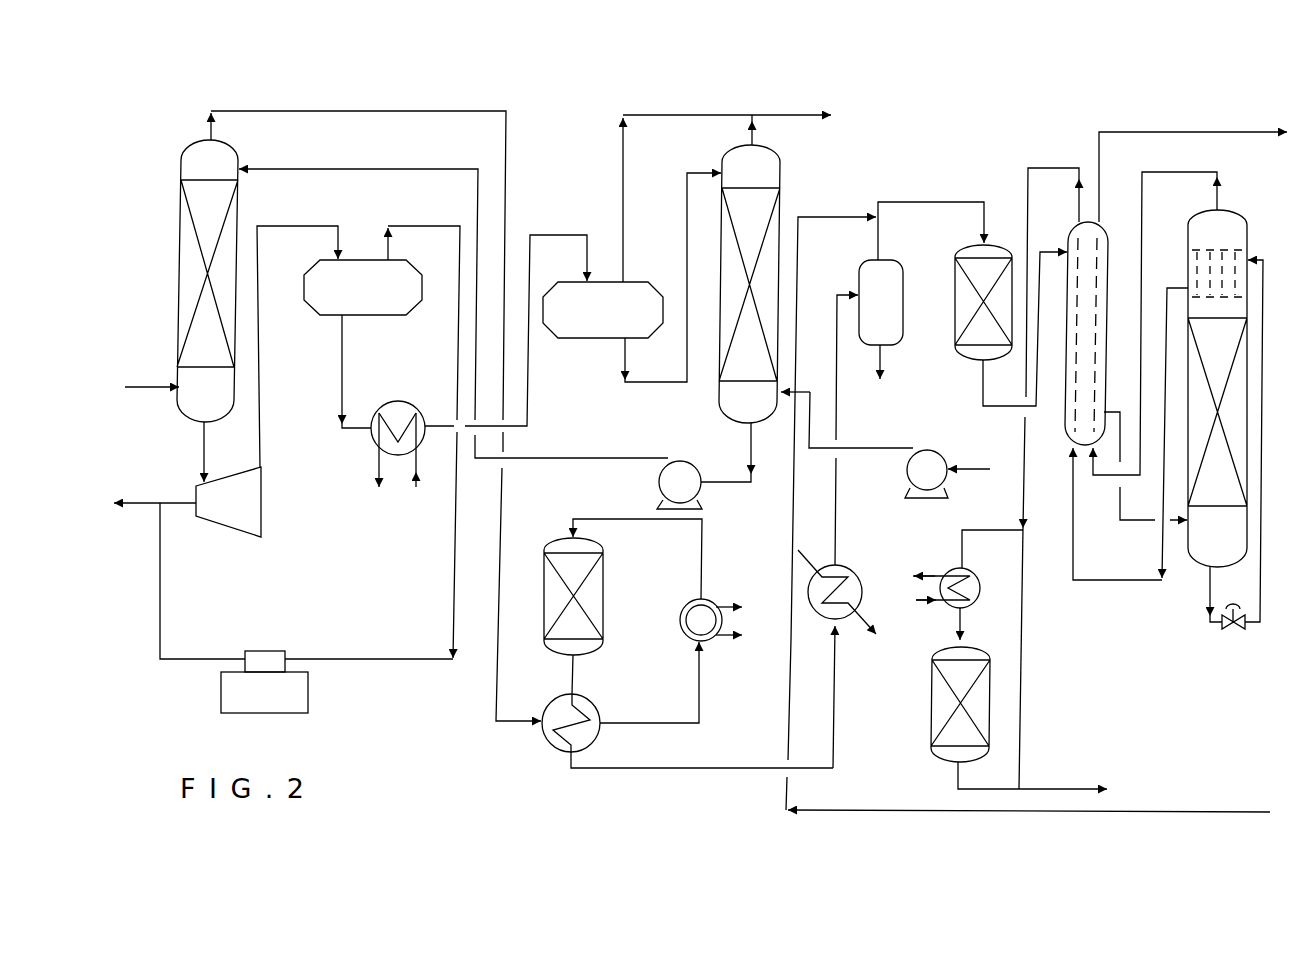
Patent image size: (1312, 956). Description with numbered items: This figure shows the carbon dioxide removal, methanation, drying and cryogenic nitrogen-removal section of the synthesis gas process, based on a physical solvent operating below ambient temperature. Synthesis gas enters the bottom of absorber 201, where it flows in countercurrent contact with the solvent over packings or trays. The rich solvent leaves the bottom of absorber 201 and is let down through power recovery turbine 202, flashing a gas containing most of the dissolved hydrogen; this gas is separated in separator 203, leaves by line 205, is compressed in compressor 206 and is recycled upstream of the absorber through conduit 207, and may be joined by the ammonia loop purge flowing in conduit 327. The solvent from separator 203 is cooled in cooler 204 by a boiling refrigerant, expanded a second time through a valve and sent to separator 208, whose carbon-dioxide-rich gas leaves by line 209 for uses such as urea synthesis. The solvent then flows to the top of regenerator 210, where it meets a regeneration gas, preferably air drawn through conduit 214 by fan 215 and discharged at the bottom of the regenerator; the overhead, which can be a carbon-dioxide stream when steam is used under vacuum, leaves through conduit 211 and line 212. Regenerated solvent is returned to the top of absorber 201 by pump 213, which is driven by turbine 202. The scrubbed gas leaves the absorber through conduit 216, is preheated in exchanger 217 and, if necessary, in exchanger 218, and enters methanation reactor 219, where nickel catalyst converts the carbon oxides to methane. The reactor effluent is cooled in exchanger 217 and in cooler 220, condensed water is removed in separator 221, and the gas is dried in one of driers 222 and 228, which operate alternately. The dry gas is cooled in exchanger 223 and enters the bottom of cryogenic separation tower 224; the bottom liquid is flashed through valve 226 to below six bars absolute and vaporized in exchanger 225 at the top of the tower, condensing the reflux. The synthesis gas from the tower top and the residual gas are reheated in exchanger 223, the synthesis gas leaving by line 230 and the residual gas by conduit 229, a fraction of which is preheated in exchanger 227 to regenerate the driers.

The absorber 201 is at (181, 271).
The power recovery turbine 202 is at (187, 479).
The separator 203 is at (339, 346).
The cooler 204 is at (464, 361).
The gas line 205 is at (424, 429).
The compressor 206 is at (264, 682).
The conduit 207 is at (306, 582).
The separator 208 is at (632, 277).
The vapor line 209 is at (601, 200).
The regenerator 210 is at (786, 183).
The conduit 211 is at (751, 134).
The product gas line 212 is at (727, 105).
The pump 213 is at (495, 339).
The conduit 214 is at (973, 460).
The fan 215 is at (864, 445).
The conduit 216 is at (376, 404).
The exchanger 217 is at (548, 749).
The exchanger 218 is at (679, 619).
The methanation reactor 219 is at (605, 585).
The cooler 220 is at (860, 578).
The separator 221 is at (869, 412).
The drier 222 is at (962, 250).
The exchanger 223 is at (1103, 478).
The cryogenic separation tower 224 is at (1258, 204).
The exchanger 225 is at (1228, 250).
The valve 226 is at (1230, 633).
The exchanger 227 is at (952, 566).
The drier 228 is at (934, 704).
The conduit 229 is at (1032, 776).
The product line 230 is at (1193, 164).
The conduit 327 is at (1028, 516).